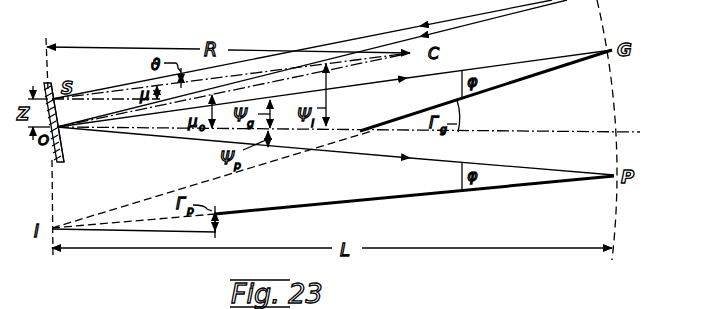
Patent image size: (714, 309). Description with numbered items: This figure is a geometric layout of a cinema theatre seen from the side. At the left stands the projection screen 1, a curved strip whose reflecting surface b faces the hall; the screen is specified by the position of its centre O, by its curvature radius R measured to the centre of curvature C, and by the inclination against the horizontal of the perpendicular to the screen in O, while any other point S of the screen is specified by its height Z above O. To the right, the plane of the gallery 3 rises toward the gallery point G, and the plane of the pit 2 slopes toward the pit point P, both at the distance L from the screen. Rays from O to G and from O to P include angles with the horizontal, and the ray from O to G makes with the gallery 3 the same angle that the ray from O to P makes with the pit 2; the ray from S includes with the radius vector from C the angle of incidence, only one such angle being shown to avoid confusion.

The mirror 1 is at (47, 126).
The reflecting surface of mirror b is at (59, 157).
The optical element at P 2 is at (425, 195).
The optical element at G 3 is at (490, 89).